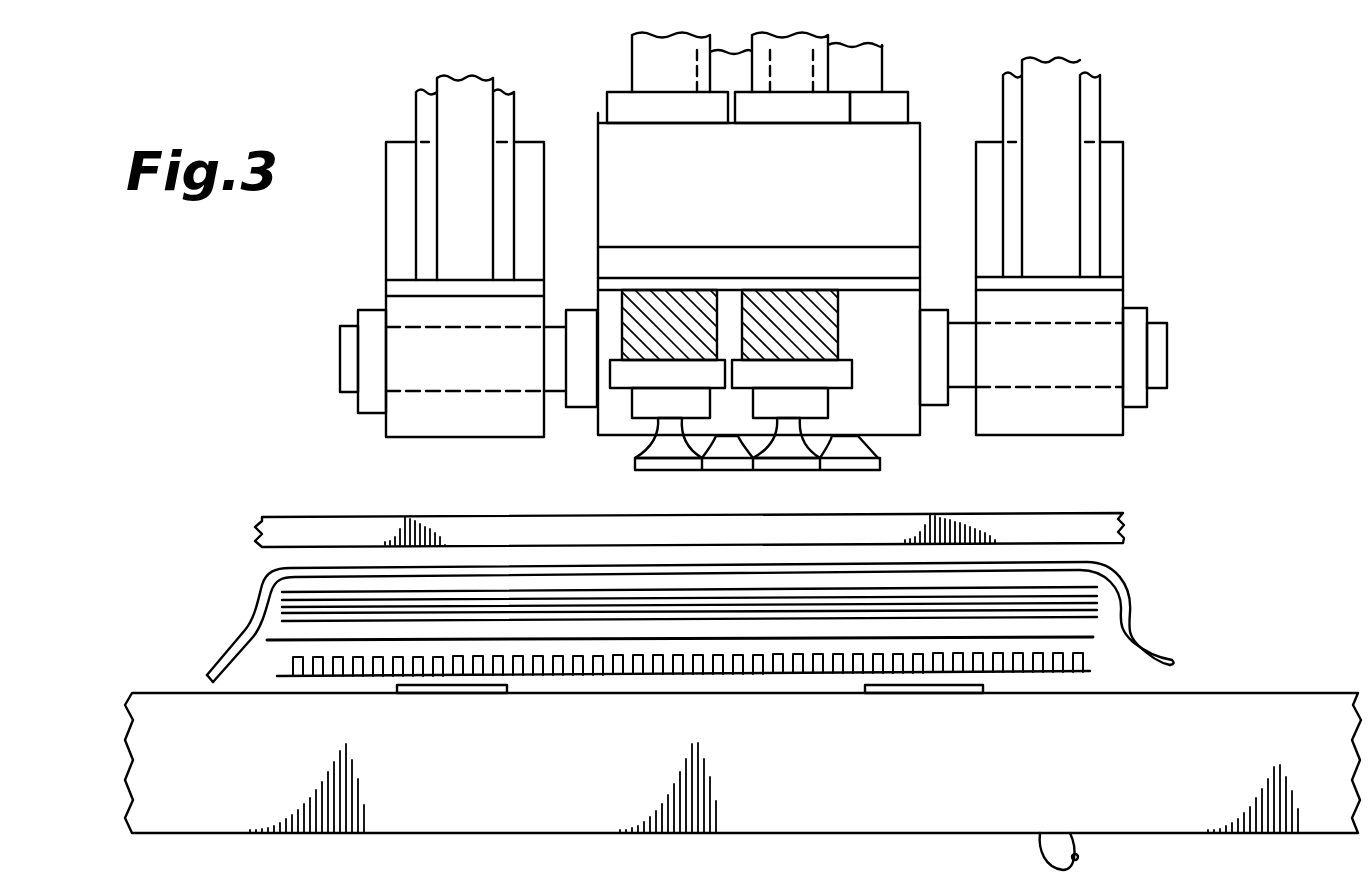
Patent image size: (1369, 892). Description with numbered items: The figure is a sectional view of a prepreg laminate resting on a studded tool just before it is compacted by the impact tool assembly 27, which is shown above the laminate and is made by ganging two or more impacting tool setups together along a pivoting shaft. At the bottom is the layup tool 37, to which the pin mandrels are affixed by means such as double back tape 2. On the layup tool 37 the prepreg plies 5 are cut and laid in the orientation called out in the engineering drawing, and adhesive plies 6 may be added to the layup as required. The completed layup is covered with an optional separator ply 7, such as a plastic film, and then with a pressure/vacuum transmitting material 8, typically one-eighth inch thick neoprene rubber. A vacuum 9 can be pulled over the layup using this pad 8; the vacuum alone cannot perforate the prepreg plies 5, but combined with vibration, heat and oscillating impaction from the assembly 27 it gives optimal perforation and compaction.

The impact tool assembly 27 is at (655, 57).
The pressure/vacuum transmitting material 8 is at (347, 527).
The separator ply 7 is at (257, 582).
The prepreg plies 5 is at (1090, 587).
The adhesive plies 6 is at (1085, 640).
The double back tape 2 is at (479, 693).
The layup tool 37 is at (242, 785).
The vacuum 9 is at (1041, 849).